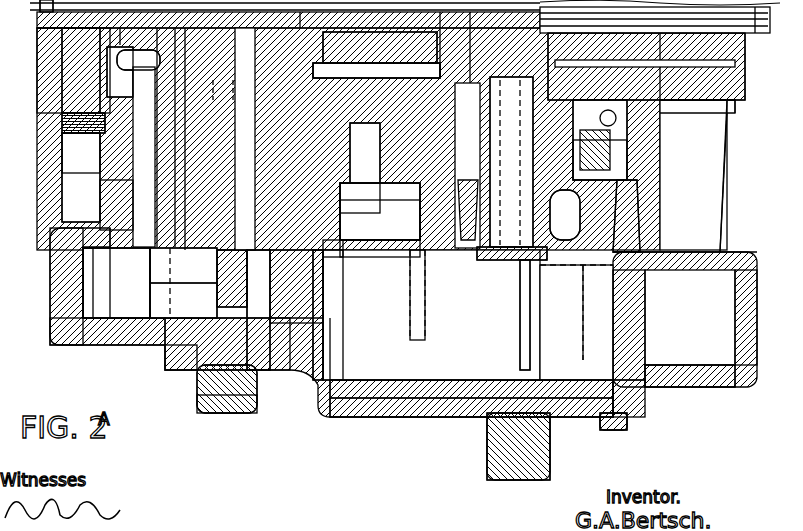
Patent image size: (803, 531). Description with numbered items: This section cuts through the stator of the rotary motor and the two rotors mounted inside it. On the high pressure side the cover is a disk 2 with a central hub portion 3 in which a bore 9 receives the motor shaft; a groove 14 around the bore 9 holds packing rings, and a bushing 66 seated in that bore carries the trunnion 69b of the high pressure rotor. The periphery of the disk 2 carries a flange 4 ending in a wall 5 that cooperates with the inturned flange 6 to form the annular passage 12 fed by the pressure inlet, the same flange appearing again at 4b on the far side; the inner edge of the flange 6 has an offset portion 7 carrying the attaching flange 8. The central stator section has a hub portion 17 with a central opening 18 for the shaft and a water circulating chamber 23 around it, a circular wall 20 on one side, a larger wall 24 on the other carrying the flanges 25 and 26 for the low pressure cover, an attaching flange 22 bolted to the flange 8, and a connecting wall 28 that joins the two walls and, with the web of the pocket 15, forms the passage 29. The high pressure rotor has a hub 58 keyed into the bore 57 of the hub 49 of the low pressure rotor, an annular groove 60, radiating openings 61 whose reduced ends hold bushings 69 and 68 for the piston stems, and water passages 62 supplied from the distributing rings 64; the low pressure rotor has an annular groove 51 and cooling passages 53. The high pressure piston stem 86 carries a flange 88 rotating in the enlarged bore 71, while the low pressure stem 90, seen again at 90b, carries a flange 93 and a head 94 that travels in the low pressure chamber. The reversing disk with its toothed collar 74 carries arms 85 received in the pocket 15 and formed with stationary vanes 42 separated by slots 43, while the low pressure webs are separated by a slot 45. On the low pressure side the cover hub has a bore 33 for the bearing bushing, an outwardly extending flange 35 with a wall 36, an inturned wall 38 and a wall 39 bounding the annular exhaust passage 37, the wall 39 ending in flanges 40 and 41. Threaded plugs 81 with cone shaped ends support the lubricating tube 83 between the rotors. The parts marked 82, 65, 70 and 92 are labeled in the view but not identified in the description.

The bore 9 is at (40, 10).
The bushing 66 is at (80, 30).
The central distributing rings 64 is at (120, 62).
The bushings 69 is at (125, 70).
The wall 82 is at (80, 85).
The hub portion 3 is at (70, 98).
The packing 65 is at (70, 122).
The bushings 68 is at (75, 145).
The disk 2 is at (95, 190).
The water passages 62 is at (105, 210).
The wall 5 is at (62, 268).
The annular passage 12 is at (88, 295).
The flange 4 is at (90, 248).
The radiating openings 61 is at (92, 300).
The piston stem 86 is at (218, 250).
The flange 88 is at (218, 278).
The enlarged bore 71 is at (250, 262).
The inturned flange 6 is at (105, 345).
The stationary vanes 42 is at (165, 350).
The offset portion 7 is at (175, 370).
The flange 8 is at (200, 413).
The attaching flange 22 is at (245, 413).
The piston stem 90 is at (258, 370).
The slots 43 is at (268, 380).
The trunnion 69b is at (310, 330).
The seat 70 is at (335, 252).
The connecting wall 28 is at (375, 257).
The central opening 18 is at (360, 125).
The externally toothed collar 74 is at (360, 193).
The annular groove 60 is at (342, 195).
The circular wall 20 is at (342, 222).
The water circulating chamber 23 is at (415, 190).
The hub 49 is at (376, 71).
The bore 57 is at (360, 125).
The central hub portion 17 is at (405, 95).
The wall 24 is at (427, 262).
The flange 93 is at (495, 262).
The annular groove 51 is at (498, 80).
The bore 33 is at (740, 70).
The threaded plugs 81 is at (735, 105).
The lubricating tube 83 is at (690, 110).
The hub portion 58 is at (660, 140).
The piston stem 90b is at (615, 165).
The strut 92 is at (630, 210).
The passages 53 is at (575, 222).
The outwardly extending flange 35 is at (720, 252).
The wall 39 is at (630, 312).
The wall 36 is at (740, 328).
The annular passage 37 is at (690, 387).
The inturned wall 38 is at (675, 387).
The groove 14 is at (627, 423).
The flange 40 is at (600, 430).
The flange 41 is at (550, 455).
The slot 45 is at (530, 308).
The piston head 94 is at (530, 333).
The pocket 15 is at (400, 397).
The arms 85 is at (430, 417).
The flange 25 is at (460, 417).
The flange 26 is at (490, 477).
The passage 29 is at (368, 365).
The flange 4b is at (314, 495).